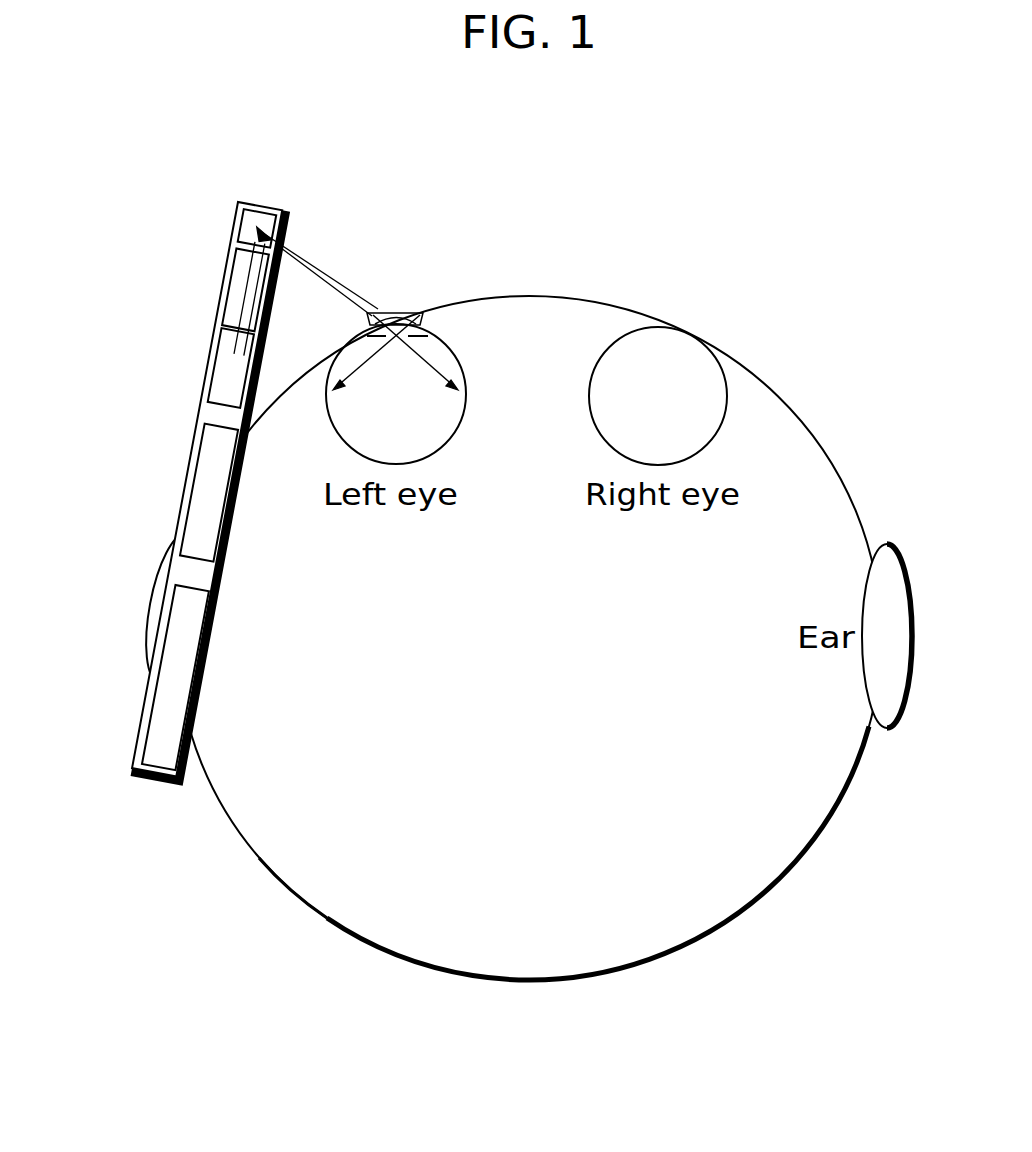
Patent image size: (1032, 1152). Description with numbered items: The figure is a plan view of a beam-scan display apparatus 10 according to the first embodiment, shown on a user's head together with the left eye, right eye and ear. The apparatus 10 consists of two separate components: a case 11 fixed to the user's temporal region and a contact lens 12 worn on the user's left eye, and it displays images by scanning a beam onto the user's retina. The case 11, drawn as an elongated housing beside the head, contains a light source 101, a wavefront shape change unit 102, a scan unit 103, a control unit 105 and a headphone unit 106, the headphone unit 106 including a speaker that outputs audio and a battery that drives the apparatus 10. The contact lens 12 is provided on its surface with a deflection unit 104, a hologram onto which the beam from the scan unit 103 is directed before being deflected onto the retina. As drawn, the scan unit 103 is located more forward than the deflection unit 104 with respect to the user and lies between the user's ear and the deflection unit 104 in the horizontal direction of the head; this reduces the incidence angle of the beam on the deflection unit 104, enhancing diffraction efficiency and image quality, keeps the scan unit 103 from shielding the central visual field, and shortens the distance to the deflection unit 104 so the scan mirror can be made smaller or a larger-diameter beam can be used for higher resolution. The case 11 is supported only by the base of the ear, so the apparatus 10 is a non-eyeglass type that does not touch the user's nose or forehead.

The beam-scan display apparatus 10 is at (346, 122).
The case 11 is at (260, 199).
The contact lens 12 is at (374, 306).
The light source 101 is at (222, 368).
The wavefront shape change unit 102 is at (238, 286).
The scan unit 103 is at (245, 225).
The deflection unit 104 is at (397, 313).
The control unit 105 is at (204, 489).
The headphone unit 106 is at (172, 643).